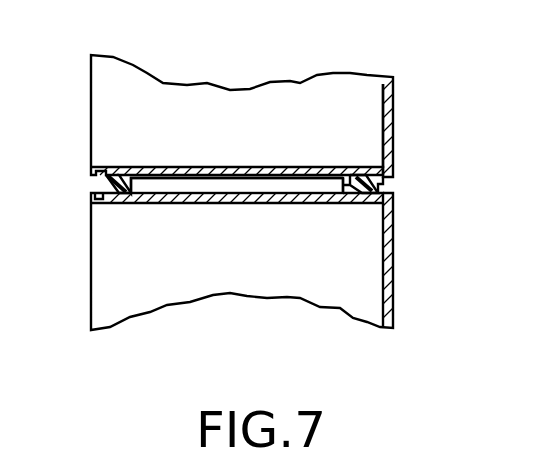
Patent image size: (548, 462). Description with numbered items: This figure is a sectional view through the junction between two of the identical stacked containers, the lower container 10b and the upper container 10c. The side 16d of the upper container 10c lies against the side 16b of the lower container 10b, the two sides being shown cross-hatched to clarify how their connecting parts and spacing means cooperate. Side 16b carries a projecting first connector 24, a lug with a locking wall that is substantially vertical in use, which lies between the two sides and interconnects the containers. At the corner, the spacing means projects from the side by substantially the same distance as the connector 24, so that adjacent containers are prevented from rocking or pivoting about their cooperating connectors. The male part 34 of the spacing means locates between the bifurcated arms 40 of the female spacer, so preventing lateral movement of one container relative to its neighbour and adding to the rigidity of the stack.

The container 10b is at (243, 280).
The container 10c is at (244, 89).
The side 16b is at (177, 206).
The side 16d is at (178, 167).
The first connector 24 is at (243, 185).
The male part 34 is at (366, 190).
The bifurcated arms 40 is at (368, 186).